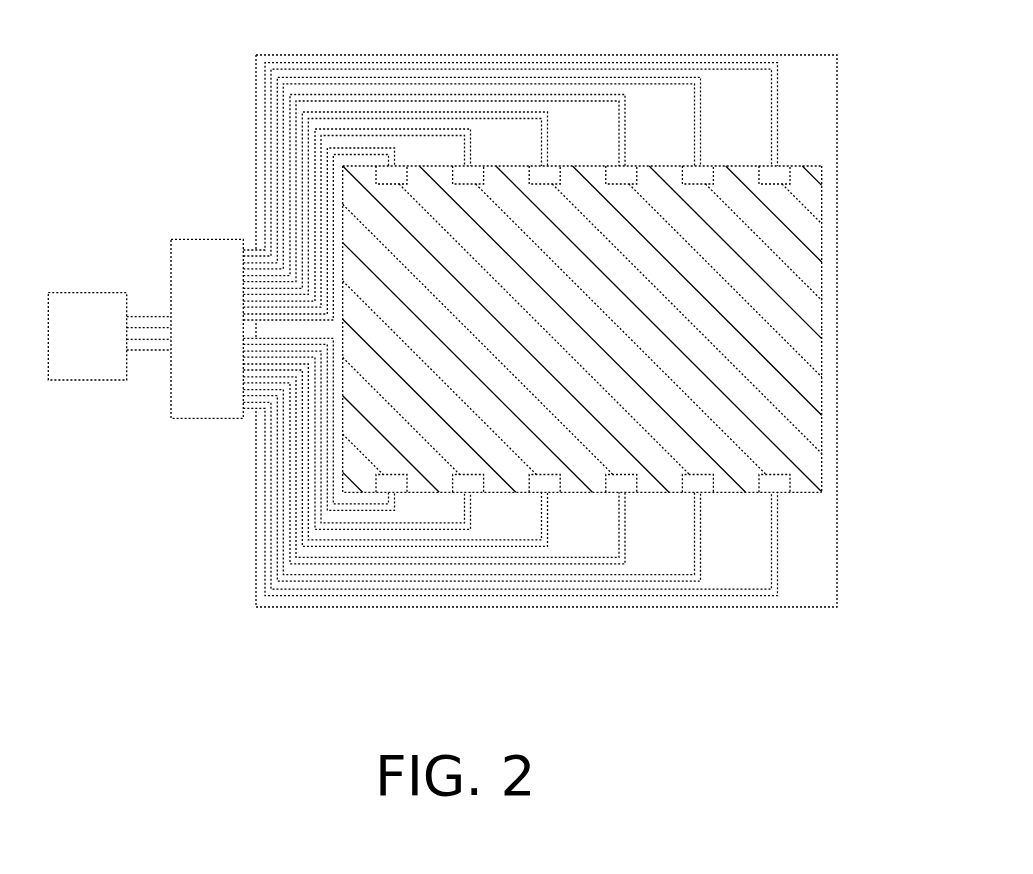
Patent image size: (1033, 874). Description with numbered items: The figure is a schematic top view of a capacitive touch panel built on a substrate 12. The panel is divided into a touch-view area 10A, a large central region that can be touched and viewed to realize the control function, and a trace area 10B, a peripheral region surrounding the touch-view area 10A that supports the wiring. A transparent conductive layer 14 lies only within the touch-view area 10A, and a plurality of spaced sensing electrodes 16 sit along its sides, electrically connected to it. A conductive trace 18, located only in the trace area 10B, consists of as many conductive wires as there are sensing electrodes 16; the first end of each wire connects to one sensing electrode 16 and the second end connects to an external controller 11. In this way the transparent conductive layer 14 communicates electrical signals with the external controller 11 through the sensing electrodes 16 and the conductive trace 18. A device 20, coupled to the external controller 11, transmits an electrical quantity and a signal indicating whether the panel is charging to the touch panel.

The substrate 12 is at (799, 67).
The conductive trace 18 is at (778, 110).
The sensing electrodes 16 is at (787, 166).
The touch-view area 10A is at (823, 239).
The transparent conductive layer 14 is at (792, 313).
The trace area 10B is at (807, 582).
The external controller 11 is at (188, 239).
The device 20 is at (93, 307).